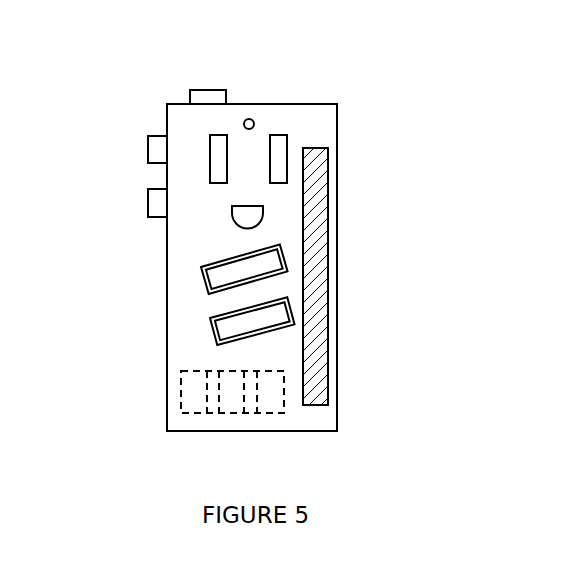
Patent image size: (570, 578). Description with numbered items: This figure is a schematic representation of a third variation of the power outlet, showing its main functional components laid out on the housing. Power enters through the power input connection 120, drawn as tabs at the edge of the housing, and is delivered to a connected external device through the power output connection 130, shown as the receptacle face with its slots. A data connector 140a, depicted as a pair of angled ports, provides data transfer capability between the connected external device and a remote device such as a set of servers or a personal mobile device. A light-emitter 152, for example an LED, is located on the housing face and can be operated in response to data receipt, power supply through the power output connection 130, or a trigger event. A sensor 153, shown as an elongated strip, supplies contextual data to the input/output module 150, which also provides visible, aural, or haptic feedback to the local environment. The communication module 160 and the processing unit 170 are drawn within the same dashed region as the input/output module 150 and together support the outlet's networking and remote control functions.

The power input connection 120 is at (198, 86).
The power output connection 130 is at (208, 215).
The data connector 140a is at (231, 278).
The input/output module 150 is at (178, 398).
The light-emitter 152 is at (258, 117).
The sensor 153 is at (330, 220).
The communication module 160 is at (228, 415).
The processing unit 170 is at (282, 415).